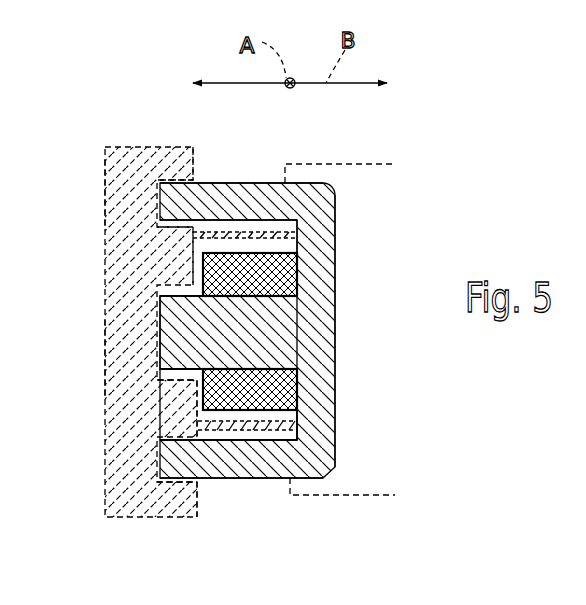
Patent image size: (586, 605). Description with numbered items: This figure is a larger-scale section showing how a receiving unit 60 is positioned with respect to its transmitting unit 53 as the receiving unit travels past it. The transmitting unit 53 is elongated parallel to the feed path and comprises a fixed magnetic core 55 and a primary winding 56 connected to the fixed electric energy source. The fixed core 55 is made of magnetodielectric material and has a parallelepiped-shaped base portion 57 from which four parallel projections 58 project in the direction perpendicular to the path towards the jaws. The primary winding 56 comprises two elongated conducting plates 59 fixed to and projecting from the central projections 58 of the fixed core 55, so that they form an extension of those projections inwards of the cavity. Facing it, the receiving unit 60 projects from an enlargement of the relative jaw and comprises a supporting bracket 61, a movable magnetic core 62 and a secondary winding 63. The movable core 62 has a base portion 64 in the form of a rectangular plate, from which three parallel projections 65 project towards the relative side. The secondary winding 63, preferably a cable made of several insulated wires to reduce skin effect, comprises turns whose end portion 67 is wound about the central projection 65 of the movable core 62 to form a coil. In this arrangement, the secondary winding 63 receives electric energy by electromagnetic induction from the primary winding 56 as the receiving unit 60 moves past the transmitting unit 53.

The transmitting unit 53 is at (100, 203).
The fixed magnetic core 55 is at (137, 163).
The primary winding 56 is at (303, 388).
The base portion 57 is at (120, 364).
The parallel projections 58 is at (194, 175).
The elongated conducting plates 59 is at (293, 233).
The receiving unit 60 is at (352, 307).
The supporting bracket 61 is at (297, 348).
The movable magnetic core 62 is at (317, 418).
The secondary winding 63 is at (234, 395).
The base portion 64 is at (312, 322).
The parallel projections 65 is at (200, 210).
The end portion 67 is at (290, 269).